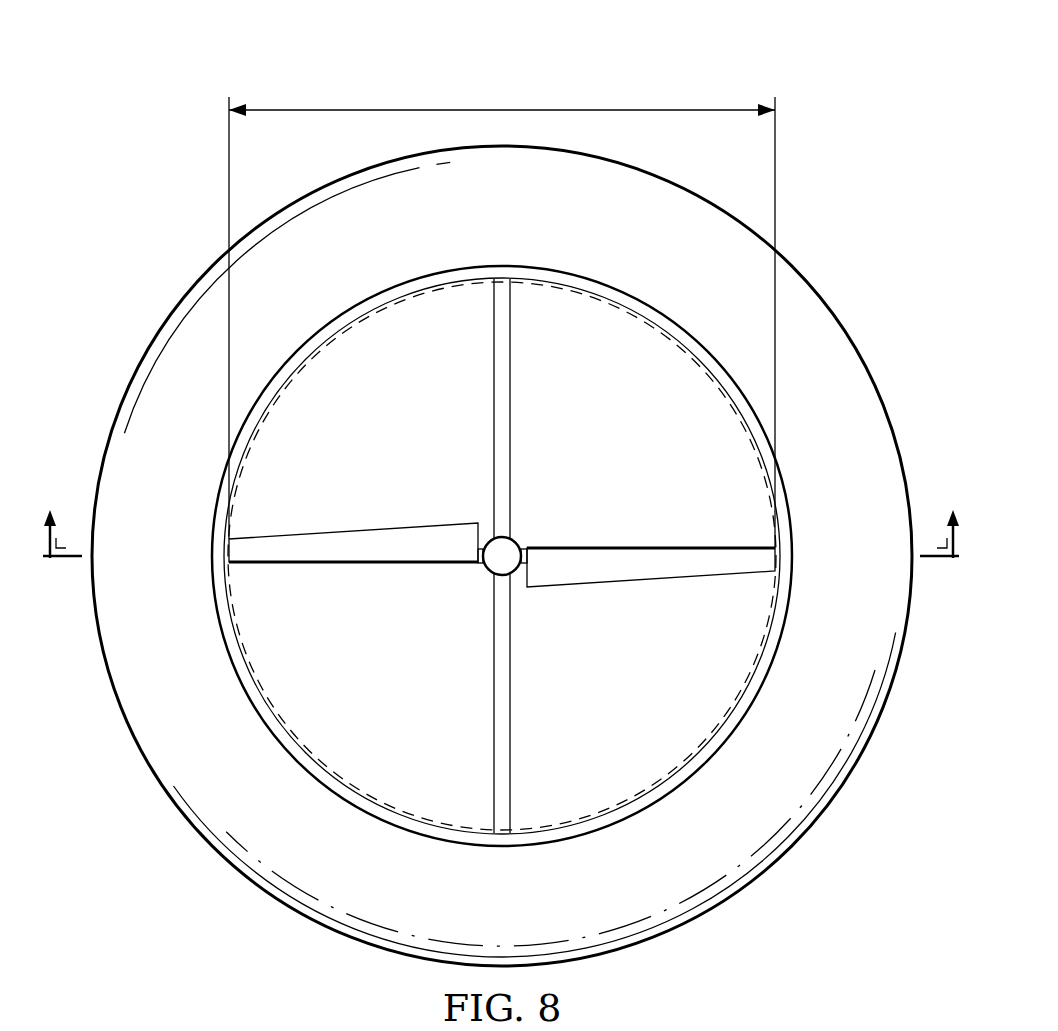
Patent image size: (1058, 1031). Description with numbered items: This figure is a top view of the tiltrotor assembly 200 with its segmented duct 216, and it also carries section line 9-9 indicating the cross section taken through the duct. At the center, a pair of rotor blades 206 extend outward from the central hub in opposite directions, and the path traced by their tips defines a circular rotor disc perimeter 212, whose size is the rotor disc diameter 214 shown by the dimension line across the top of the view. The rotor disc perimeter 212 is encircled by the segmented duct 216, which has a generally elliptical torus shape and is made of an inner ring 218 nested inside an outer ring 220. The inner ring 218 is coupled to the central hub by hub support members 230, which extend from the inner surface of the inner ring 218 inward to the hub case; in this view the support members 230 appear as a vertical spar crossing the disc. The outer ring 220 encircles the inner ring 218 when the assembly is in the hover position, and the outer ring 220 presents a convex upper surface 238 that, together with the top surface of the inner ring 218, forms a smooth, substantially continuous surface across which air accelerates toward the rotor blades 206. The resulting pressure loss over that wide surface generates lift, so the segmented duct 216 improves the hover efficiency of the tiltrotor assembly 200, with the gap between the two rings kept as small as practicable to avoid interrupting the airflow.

The tiltrotor assembly 200 is at (125, 77).
The rotor blades 206 is at (352, 522).
The rotor disc perimeter 212 is at (632, 315).
The rotor disc diameter 214 is at (502, 110).
The segmented duct 216 is at (845, 325).
The inner ring 218 is at (313, 342).
The outer ring 220 is at (146, 350).
The hub support members 230 is at (494, 392).
The upper surface 238 is at (818, 756).
The section line 9- 9 is at (502, 519).